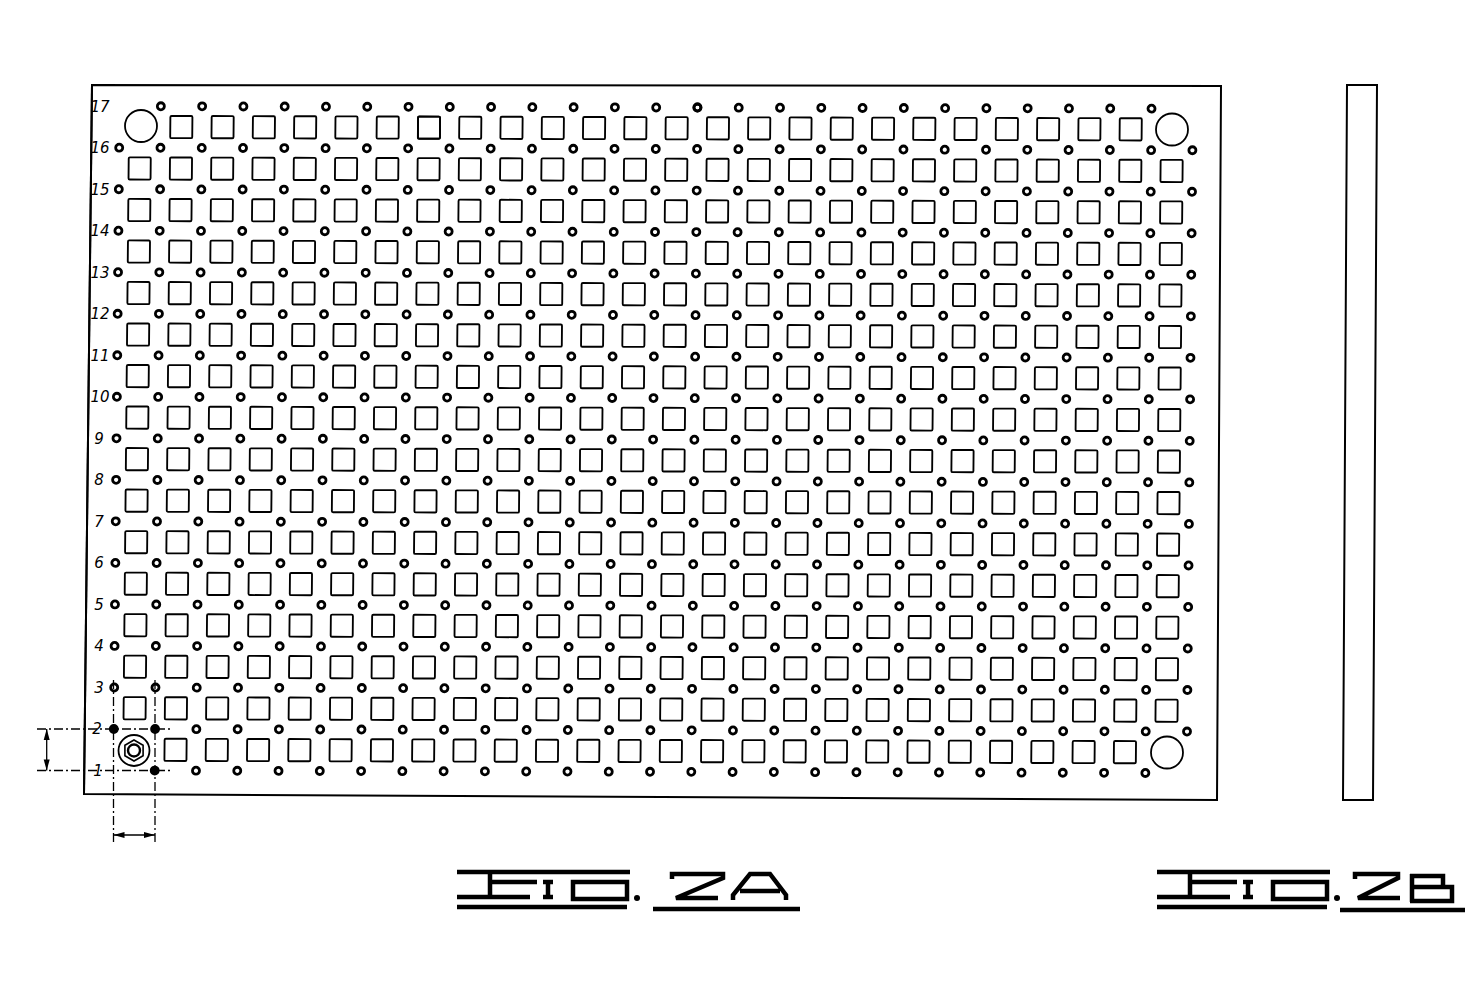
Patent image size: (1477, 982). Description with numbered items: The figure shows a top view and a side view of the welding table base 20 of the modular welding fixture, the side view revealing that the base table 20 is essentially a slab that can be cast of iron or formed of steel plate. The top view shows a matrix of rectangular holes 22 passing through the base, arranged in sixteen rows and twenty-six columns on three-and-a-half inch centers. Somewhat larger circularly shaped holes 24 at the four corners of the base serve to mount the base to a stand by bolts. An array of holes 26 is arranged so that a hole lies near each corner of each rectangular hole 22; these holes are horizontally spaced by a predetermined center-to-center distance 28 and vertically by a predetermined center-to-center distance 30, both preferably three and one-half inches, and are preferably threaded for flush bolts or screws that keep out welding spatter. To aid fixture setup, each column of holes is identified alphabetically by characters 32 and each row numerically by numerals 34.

In FIG. 2A, the welding table base 20 is at (281, 78).
In FIG. 2B, the welding table base 20 is at (1362, 395).
In FIG. 2A, the rectangular holes 22 is at (428, 122).
In FIG. 2A, the circularly shaped holes 24 is at (142, 122).
In FIG. 2A, the holes 26 is at (698, 106).
In FIG. 2A, the horizontal center-to-center distance 28 is at (137, 838).
In FIG. 2A, the vertical center-to-center distance 30 is at (48, 746).
In FIG. 2A, the alphabetic characters 32 is at (642, 800).
In FIG. 2A, the numerals 34 is at (92, 383).